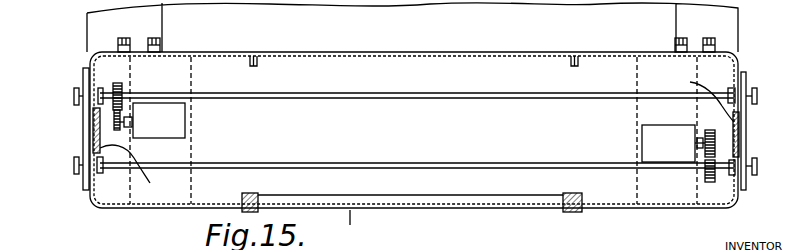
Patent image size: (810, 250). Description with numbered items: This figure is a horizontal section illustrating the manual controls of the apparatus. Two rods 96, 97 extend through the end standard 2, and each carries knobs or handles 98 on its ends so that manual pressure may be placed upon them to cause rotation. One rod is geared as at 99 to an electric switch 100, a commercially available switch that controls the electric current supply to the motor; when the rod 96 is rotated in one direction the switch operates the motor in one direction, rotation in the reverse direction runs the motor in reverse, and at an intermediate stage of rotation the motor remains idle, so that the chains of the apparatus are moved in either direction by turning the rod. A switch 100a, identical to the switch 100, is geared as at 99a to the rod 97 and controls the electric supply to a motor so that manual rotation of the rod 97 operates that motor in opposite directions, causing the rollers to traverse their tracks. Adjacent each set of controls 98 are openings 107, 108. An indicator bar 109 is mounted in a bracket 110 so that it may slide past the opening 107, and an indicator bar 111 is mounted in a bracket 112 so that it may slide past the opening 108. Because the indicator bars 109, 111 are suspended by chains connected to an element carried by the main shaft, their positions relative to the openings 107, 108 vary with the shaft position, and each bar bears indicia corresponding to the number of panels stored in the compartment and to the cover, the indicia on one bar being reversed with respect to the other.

The end standard 2 is at (355, 43).
The rod 96 is at (347, 93).
The rod 97 is at (361, 163).
The knobs or handles 98 is at (74, 96).
The gearing 99 is at (123, 92).
The gearing 99a is at (710, 130).
The electric switch 100 is at (150, 139).
The switch 100a is at (652, 140).
The opening 107 is at (89, 132).
The opening 108 is at (739, 130).
The indicator bar 109 is at (93, 118).
The bracket 110 is at (139, 171).
The indicator bar 111 is at (746, 143).
The bracket 112 is at (694, 98).